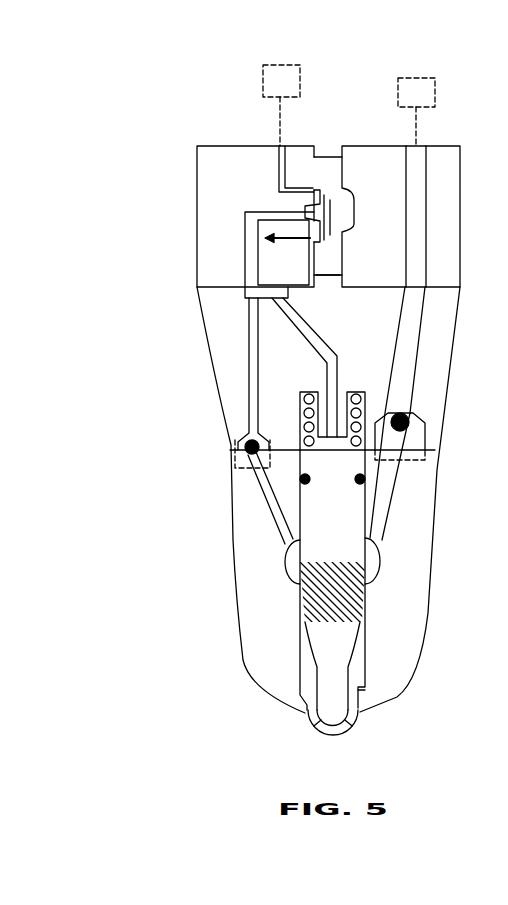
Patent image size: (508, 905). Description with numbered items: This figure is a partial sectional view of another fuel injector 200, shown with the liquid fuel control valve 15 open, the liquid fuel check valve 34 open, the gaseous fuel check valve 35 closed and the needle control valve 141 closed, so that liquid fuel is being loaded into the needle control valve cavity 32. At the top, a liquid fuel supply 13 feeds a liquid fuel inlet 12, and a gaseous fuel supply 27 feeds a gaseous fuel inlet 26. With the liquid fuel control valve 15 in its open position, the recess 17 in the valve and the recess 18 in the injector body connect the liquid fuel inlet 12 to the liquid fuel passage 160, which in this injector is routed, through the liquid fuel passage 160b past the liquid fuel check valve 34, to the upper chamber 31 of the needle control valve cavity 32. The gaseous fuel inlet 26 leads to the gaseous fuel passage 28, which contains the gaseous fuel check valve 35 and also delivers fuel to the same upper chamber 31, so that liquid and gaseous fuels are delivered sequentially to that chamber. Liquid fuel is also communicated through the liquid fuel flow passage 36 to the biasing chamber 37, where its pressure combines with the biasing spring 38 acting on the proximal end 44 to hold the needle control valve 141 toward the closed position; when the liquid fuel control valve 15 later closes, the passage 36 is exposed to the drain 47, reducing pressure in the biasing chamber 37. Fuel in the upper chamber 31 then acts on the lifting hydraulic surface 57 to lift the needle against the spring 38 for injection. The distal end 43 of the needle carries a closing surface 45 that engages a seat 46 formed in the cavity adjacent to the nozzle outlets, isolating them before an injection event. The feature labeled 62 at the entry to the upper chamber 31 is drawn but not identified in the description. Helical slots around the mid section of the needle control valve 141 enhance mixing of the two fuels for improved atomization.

The fuel injector 200 is at (116, 582).
The liquid fuel supply 13 is at (300, 66).
The gaseous fuel supply 27 is at (425, 78).
The recess 17 is at (332, 187).
The gaseous fuel inlet 26 is at (421, 166).
The recess 18 is at (316, 193).
The liquid fuel inlet 12 is at (280, 166).
The drain 47 is at (307, 240).
The liquid fuel control valve 15 is at (331, 280).
The liquid fuel passage 160 is at (250, 329).
The liquid fuel flow passage 36 is at (312, 342).
The biasing spring 38 is at (357, 404).
The gaseous fuel passage 28 is at (406, 348).
The liquid fuel check valve 34 is at (229, 462).
The gaseous fuel check valve 35 is at (432, 442).
The liquid fuel passage 160b is at (275, 490).
The biasing chamber 37 is at (267, 485).
The proximal end 44 is at (359, 483).
The upper chamber 31 is at (296, 556).
The inlet openings 62 is at (340, 600).
The needle control valve cavity 32 is at (364, 617).
The lifting hydraulic surface 57 is at (310, 677).
The needle control valve 141 is at (255, 688).
The closing surface 45 is at (310, 708).
The distal end 43 is at (357, 718).
The seat 46 is at (360, 690).